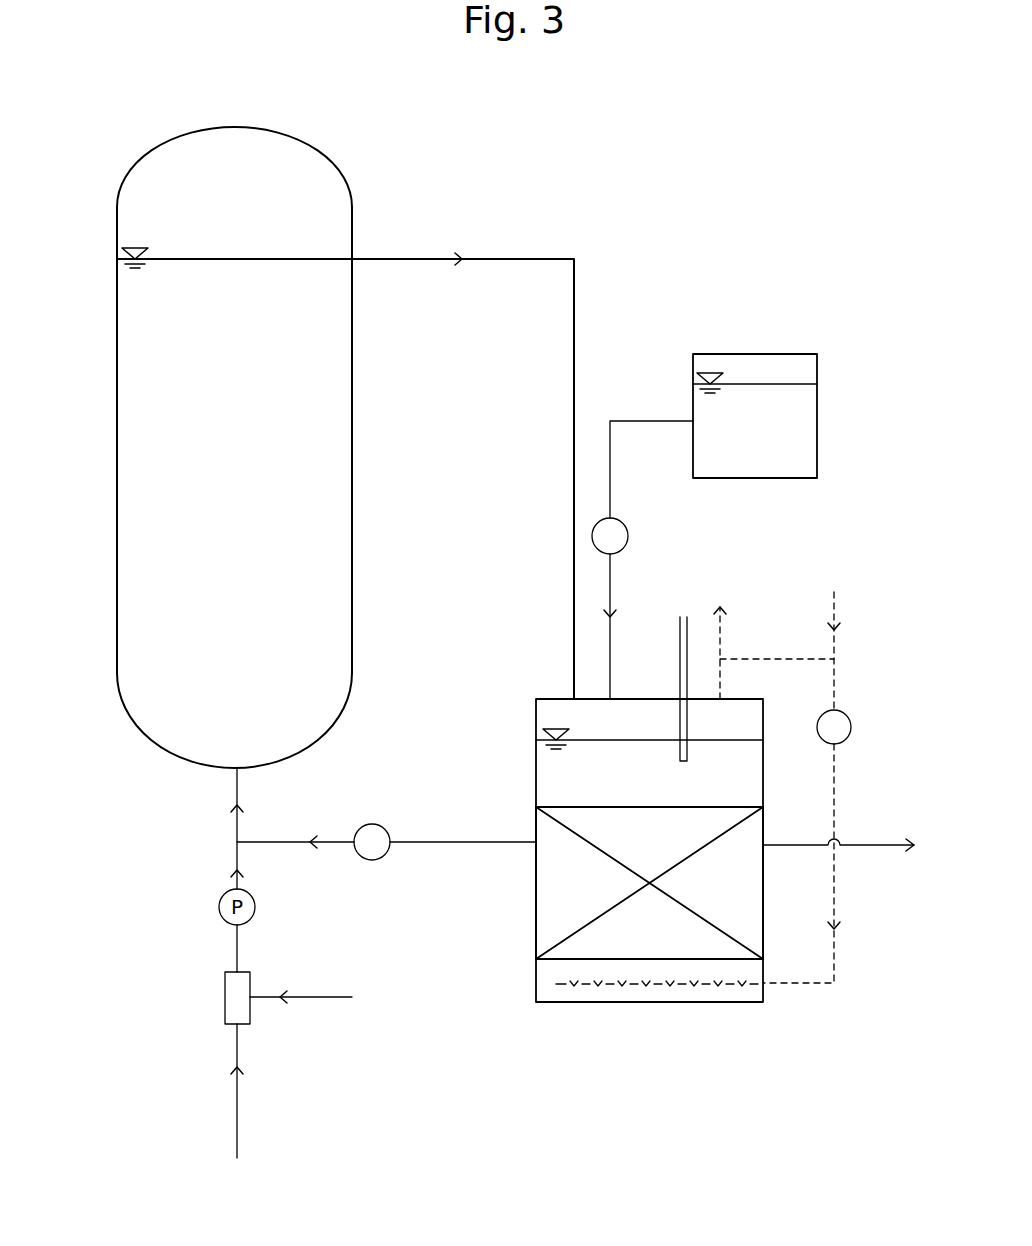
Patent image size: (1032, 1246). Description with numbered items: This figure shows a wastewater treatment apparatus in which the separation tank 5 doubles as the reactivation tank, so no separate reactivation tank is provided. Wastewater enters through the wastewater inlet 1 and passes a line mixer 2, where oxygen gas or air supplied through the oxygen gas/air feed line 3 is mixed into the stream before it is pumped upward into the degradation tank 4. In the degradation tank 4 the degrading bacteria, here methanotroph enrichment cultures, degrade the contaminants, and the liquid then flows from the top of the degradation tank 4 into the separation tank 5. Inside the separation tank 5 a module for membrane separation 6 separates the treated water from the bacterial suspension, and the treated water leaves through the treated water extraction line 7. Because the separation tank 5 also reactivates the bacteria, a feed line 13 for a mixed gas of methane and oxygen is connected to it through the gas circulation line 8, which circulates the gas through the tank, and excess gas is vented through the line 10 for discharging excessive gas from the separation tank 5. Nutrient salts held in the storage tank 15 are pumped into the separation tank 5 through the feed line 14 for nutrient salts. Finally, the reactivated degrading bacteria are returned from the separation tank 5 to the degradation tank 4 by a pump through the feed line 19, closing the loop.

The wastewater inlet 1 is at (237, 1113).
The line mixer 2 is at (225, 986).
The oxygen gas/air feed line 3 is at (305, 998).
The degradation tank 4 is at (117, 372).
The separation tank 5 is at (536, 712).
The module for membrane separation 6 is at (570, 913).
The treated water extraction line 7 is at (869, 850).
The gas circulation line 8 is at (835, 772).
The line for discharging excessive gas from the separation tank 10 is at (722, 632).
The feed line for a mixed gas of methane and oxygen 13 is at (835, 600).
The feed line for nutrient salts 14 is at (627, 421).
The storage tank for nutrient salts 15 is at (817, 433).
The feed line for supplying the degrading bacteria 19 is at (428, 846).